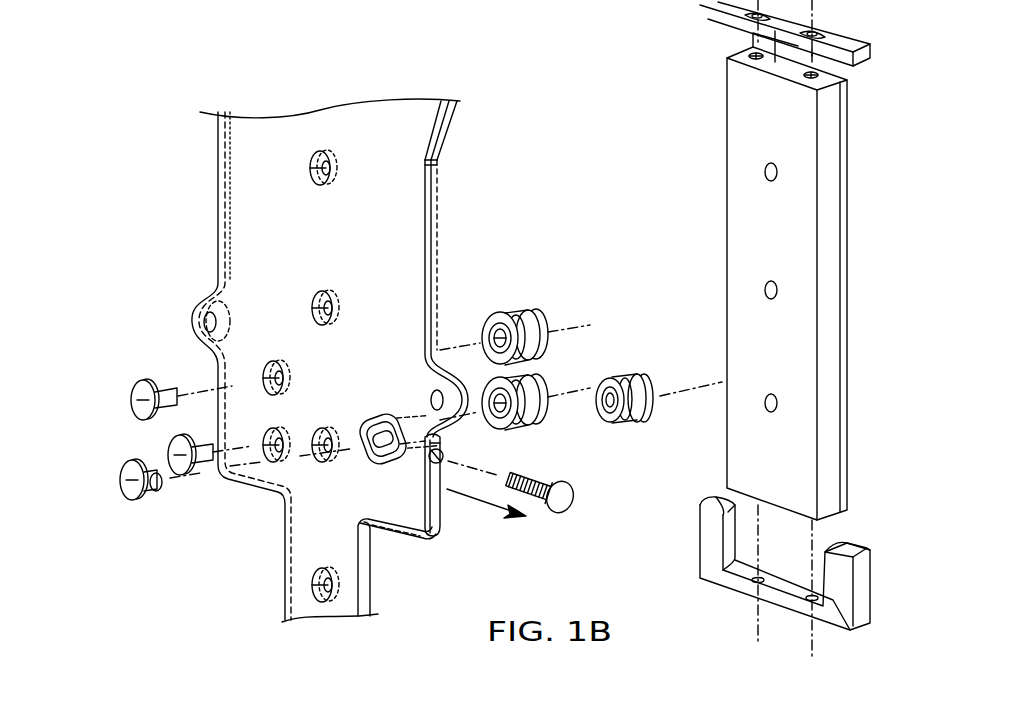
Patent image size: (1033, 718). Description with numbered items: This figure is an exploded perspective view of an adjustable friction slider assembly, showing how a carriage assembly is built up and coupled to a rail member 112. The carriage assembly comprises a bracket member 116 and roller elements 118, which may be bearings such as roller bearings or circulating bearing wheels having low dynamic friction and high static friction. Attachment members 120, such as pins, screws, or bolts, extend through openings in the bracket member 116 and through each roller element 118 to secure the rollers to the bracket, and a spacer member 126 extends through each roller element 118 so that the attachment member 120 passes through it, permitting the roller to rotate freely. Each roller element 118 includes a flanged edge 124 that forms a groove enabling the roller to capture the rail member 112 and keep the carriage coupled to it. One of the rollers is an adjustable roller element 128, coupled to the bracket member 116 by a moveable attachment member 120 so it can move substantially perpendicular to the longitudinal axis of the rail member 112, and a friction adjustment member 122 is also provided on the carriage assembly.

The rail member 112 is at (790, 240).
The bracket member 116 is at (410, 205).
The roller element 118 is at (632, 373).
The attachment member 120 is at (168, 448).
The friction adjustment member 122 is at (566, 500).
The flanged edge 124 is at (624, 423).
The spacer member 126 is at (600, 414).
The adjustable roller element 128 is at (652, 414).